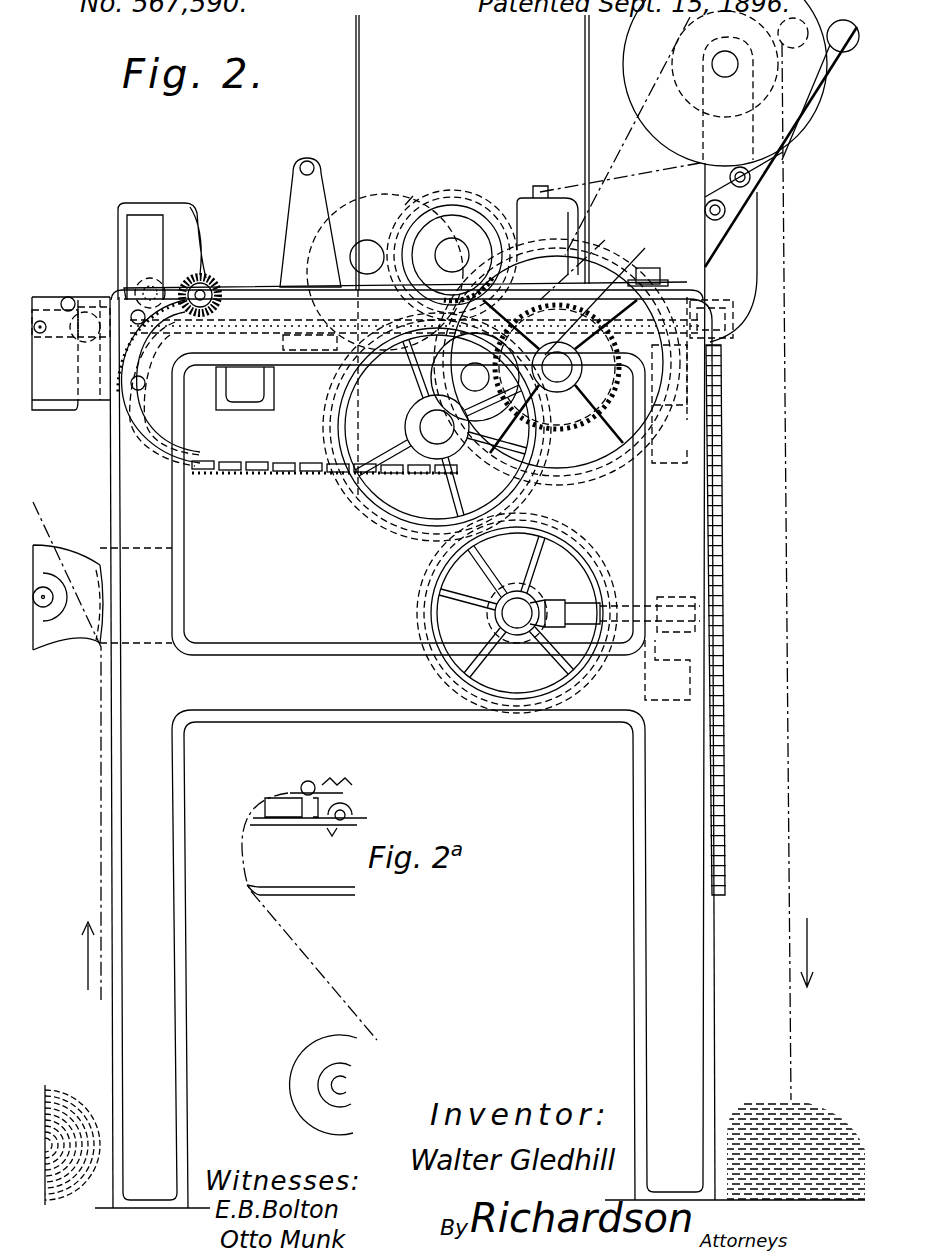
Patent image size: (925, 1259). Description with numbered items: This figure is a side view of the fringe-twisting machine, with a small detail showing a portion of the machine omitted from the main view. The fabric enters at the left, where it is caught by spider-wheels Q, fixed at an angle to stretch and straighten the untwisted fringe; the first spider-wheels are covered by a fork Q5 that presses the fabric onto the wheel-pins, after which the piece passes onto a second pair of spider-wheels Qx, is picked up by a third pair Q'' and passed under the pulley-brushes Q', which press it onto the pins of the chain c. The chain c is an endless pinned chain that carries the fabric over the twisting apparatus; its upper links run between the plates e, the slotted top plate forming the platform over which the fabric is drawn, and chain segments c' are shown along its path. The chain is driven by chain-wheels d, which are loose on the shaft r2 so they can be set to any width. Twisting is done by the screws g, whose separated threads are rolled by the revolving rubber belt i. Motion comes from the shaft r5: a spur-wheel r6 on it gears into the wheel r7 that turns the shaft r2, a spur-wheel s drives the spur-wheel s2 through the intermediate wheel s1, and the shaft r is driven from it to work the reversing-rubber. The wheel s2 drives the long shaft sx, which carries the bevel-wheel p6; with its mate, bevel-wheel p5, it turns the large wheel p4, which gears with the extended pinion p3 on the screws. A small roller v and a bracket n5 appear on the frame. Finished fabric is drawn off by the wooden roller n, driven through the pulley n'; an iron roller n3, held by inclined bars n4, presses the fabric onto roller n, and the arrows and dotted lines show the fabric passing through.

The spider-wheels Q is at (71, 353).
The fork Q5 is at (66, 299).
The second pair of spider-wheels Qx is at (90, 305).
The third pair of spider-wheels Q'' is at (148, 288).
The pulley-brushes Q' is at (214, 281).
The chain c is at (415, 337).
The comb segments c' is at (289, 400).
The plates / platform e is at (120, 373).
The roller v is at (372, 227).
The spur-wheel s is at (385, 272).
The revolving rubber or belt i is at (408, 200).
The shaft r5 is at (452, 255).
The spur-wheel r6 is at (452, 255).
The wheel r7 is at (564, 222).
The intermediate wheel s1 is at (426, 427).
The shaft r is at (475, 377).
The shaft r2 is at (557, 367).
The chain-wheels d is at (557, 362).
The screws g is at (601, 294).
The spur-wheel s2 is at (517, 613).
The shaft sx is at (520, 620).
The bevel-wheel p6 is at (520, 592).
The bevel-wheel p5 is at (548, 588).
The large wheel p4 is at (720, 578).
The pinions p3 is at (713, 310).
The bracket n5 is at (744, 247).
The pulley n' is at (781, 147).
The roller n is at (725, 83).
The iron roller n3 is at (793, 33).
The inclined bars n4 is at (843, 36).